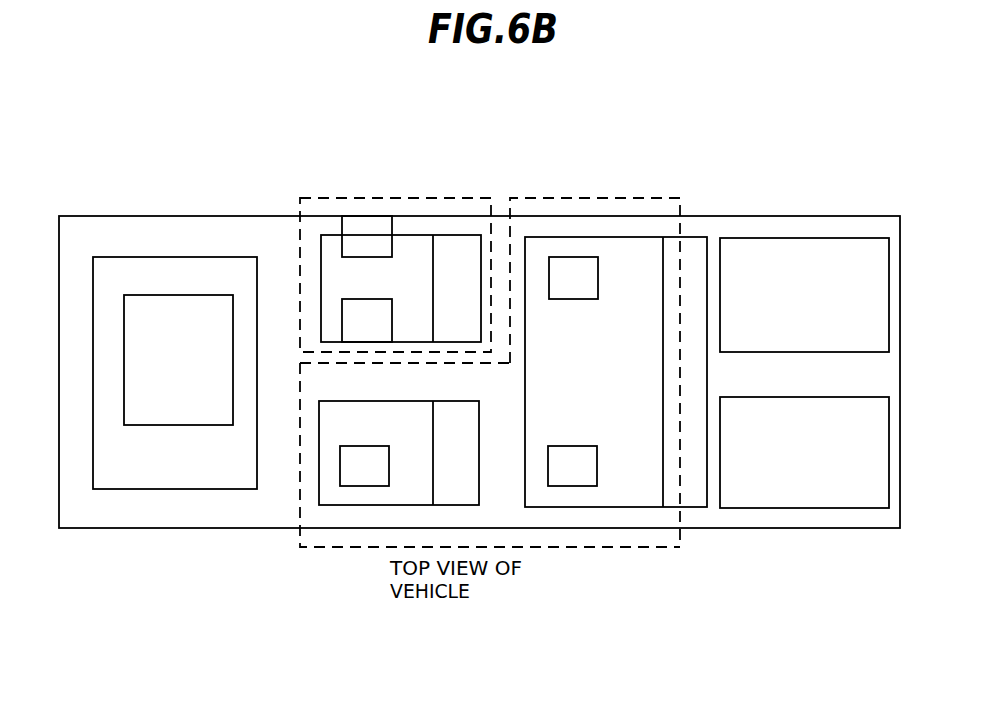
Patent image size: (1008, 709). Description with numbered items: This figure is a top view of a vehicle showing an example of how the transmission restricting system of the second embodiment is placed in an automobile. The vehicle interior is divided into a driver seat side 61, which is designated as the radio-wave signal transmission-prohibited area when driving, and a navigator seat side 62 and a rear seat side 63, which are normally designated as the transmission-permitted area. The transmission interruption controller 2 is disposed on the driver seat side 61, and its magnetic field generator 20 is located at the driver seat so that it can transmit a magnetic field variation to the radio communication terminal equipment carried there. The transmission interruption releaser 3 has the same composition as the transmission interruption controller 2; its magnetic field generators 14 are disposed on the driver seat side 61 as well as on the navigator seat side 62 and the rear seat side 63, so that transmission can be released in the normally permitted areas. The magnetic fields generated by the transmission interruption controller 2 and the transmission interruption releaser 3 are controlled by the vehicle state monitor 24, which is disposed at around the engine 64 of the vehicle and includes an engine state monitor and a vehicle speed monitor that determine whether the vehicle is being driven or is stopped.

The transmission interruption controller 2 is at (820, 238).
The transmission interruption releaser 3 is at (810, 508).
The magnetic field generator 14 is at (579, 258).
The magnetic field generator 20 is at (383, 220).
The vehicle state monitor 24 is at (168, 295).
The driver seat side 61 is at (465, 198).
The navigator seat side 62 is at (303, 503).
The rear seat side 63 is at (635, 552).
The engine 64 is at (112, 489).